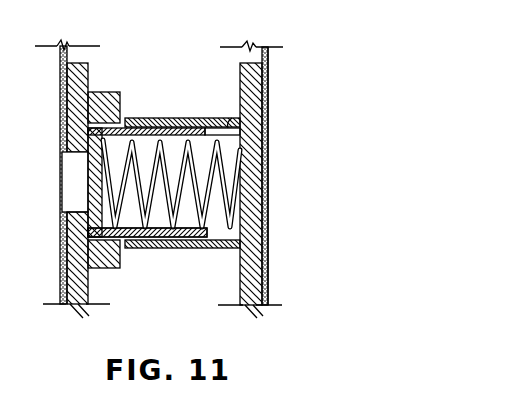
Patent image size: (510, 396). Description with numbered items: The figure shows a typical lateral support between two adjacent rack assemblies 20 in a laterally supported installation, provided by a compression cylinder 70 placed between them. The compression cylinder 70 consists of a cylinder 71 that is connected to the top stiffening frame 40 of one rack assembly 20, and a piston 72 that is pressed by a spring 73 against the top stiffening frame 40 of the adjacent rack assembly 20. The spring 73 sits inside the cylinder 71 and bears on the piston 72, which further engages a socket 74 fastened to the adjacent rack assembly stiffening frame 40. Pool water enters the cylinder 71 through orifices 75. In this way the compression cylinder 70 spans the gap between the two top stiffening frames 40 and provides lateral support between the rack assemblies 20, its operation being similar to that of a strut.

The compression cylinder 70 is at (184, 54).
The cylinder 71 is at (150, 121).
The piston 72 is at (215, 237).
The spring 73 is at (169, 213).
The socket 74 is at (100, 270).
The orifices 75 is at (228, 119).
The top stiffening frame 40 is at (72, 100).
The rack assembly 20 is at (62, 282).